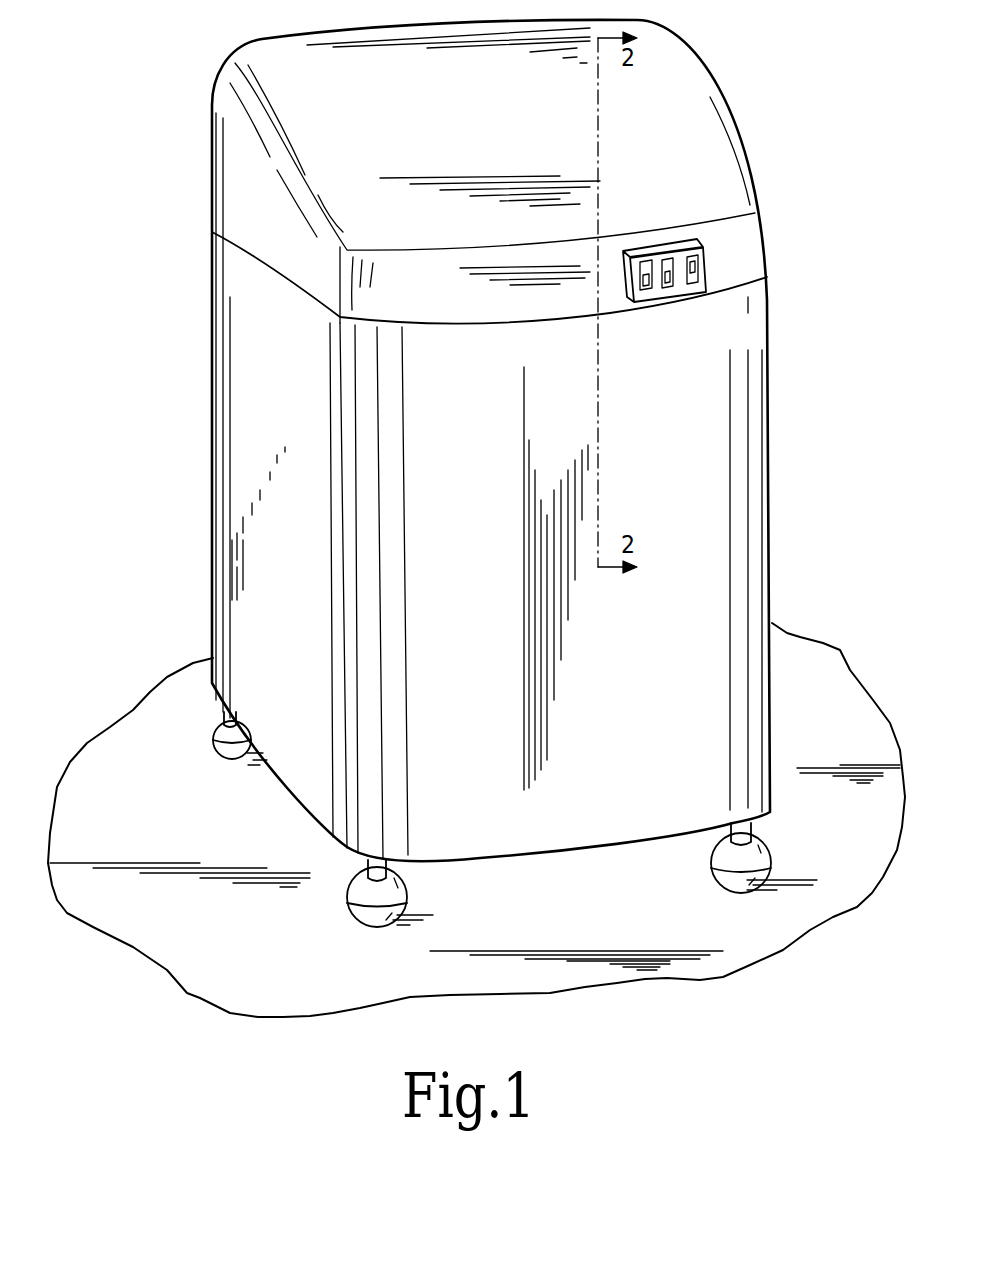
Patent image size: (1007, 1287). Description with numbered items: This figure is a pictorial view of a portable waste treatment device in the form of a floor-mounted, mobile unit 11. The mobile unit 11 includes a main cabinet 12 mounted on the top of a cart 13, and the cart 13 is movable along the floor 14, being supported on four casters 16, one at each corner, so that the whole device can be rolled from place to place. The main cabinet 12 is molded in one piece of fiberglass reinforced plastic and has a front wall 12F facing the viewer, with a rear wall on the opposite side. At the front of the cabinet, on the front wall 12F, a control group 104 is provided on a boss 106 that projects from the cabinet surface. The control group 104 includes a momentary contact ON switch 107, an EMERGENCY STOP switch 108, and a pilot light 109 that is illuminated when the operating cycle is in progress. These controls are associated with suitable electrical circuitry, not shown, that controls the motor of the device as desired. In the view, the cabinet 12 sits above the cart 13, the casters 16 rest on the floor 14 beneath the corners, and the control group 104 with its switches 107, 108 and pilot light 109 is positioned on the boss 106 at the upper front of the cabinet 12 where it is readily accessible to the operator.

The mobile unit 11 is at (185, 540).
The main cabinet 12 is at (212, 127).
The front wall 12F is at (763, 232).
The cart 13 is at (218, 496).
The floor 14 is at (219, 836).
The casters 16 is at (407, 892).
The control group 104 is at (746, 281).
The boss 106 is at (664, 249).
The momentary contact ON switch 107 is at (645, 291).
The EMERGENCY STOP switch 108 is at (697, 283).
The pilot light 109 is at (668, 289).